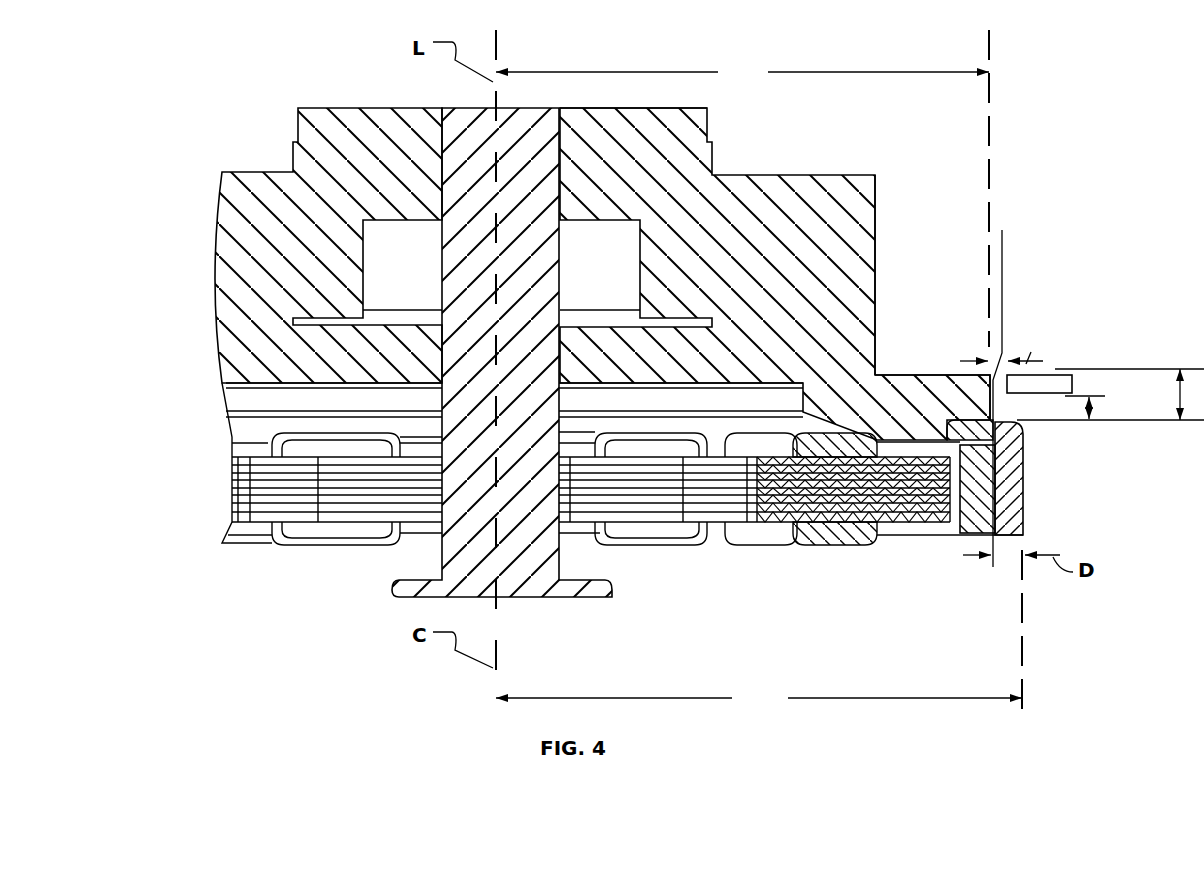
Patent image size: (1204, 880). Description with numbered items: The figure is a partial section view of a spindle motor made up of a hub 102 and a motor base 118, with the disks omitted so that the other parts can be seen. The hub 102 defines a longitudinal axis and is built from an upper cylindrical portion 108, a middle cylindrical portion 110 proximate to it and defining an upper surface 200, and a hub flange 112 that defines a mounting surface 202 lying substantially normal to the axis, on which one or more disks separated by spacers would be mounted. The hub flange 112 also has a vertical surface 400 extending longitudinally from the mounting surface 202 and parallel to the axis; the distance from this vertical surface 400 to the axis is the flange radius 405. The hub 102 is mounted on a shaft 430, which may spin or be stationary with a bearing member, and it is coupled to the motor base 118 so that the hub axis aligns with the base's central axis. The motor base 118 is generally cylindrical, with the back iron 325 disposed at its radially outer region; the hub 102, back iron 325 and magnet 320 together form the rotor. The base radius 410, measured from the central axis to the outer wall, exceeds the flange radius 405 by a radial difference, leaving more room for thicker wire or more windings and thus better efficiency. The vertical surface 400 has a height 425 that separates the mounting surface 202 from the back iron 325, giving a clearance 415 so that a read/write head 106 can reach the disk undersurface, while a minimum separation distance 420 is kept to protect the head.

The hub 102 is at (208, 95).
The motor base 118 is at (204, 414).
The upper cylindrical portion 108 is at (705, 118).
The upper surface 200 is at (760, 175).
The middle cylindrical portion 110 is at (870, 183).
The mounting surface 202 is at (898, 375).
The shaft 430 is at (530, 600).
The hub flange 112 is at (1000, 406).
The magnet 320 is at (978, 527).
The back iron 325 is at (1013, 512).
The read/write head 106 is at (1057, 376).
The vertical surface 400 is at (1002, 230).
The minimum separation distance 420 is at (1027, 356).
The clearance 415 is at (1089, 394).
The height 425 is at (1180, 422).
The radius 405 is at (742, 71).
The radius 410 is at (759, 699).